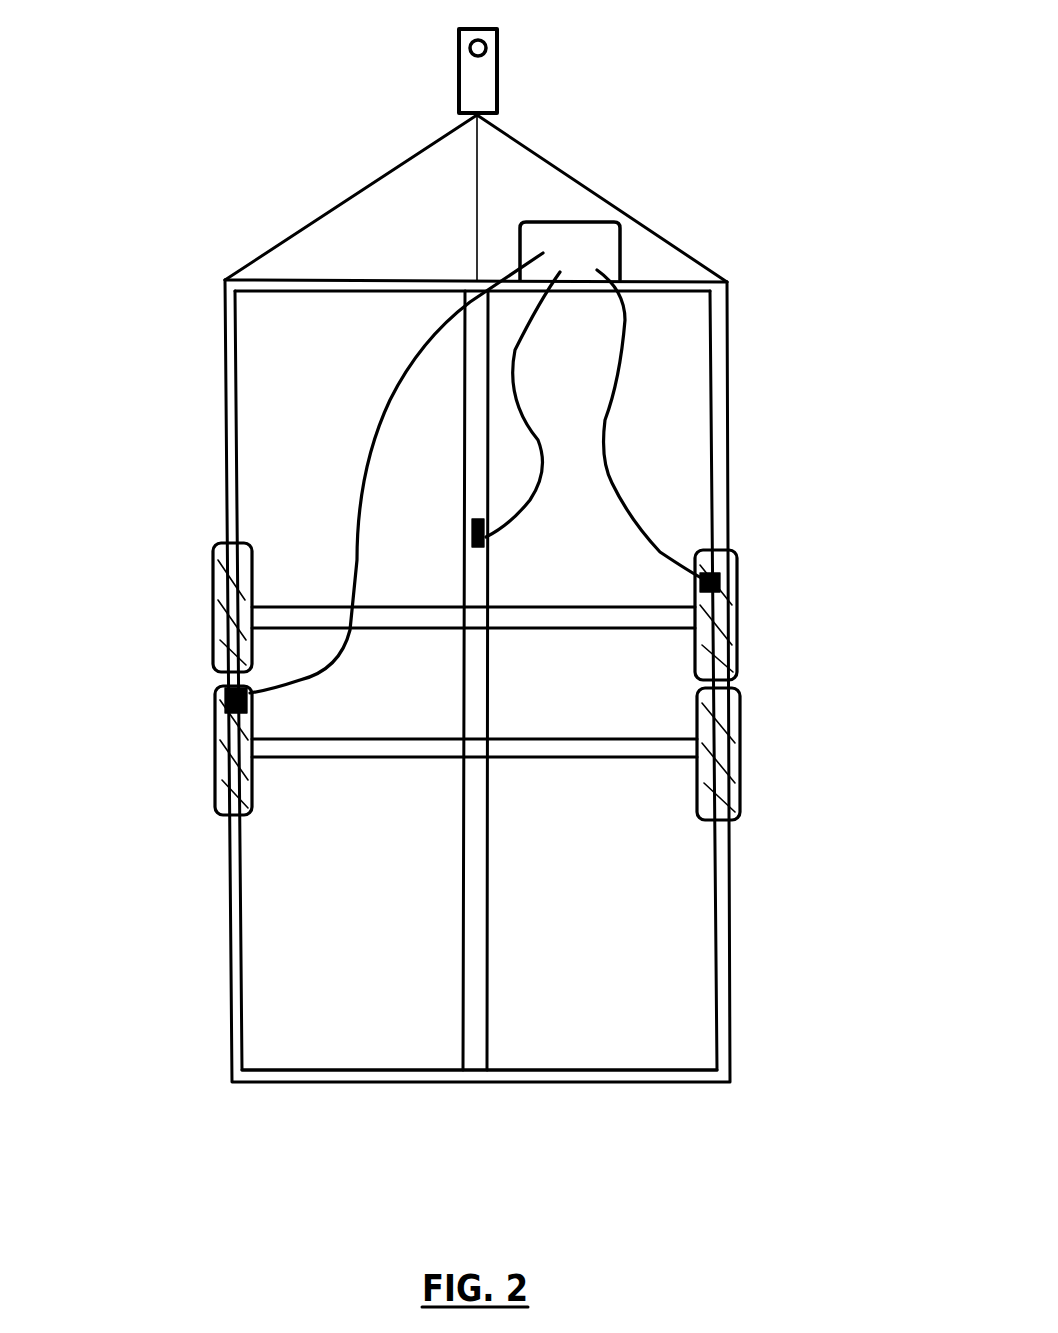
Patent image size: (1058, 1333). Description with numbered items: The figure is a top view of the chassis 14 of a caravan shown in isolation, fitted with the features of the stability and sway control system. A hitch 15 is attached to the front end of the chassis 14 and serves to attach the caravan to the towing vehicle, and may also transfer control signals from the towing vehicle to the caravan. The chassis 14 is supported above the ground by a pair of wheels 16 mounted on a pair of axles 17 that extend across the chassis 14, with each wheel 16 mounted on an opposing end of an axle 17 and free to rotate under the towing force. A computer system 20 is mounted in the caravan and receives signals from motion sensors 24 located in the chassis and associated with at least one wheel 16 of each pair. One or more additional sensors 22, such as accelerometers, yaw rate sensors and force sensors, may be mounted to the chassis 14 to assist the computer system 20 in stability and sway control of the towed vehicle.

The chassis 14 is at (755, 259).
The hitch 15 is at (512, 105).
The wheels 16 is at (213, 640).
The axles 17 is at (587, 615).
The computer system 20 is at (592, 235).
The additional sensors 22 is at (451, 528).
The motion sensors 24 is at (222, 710).